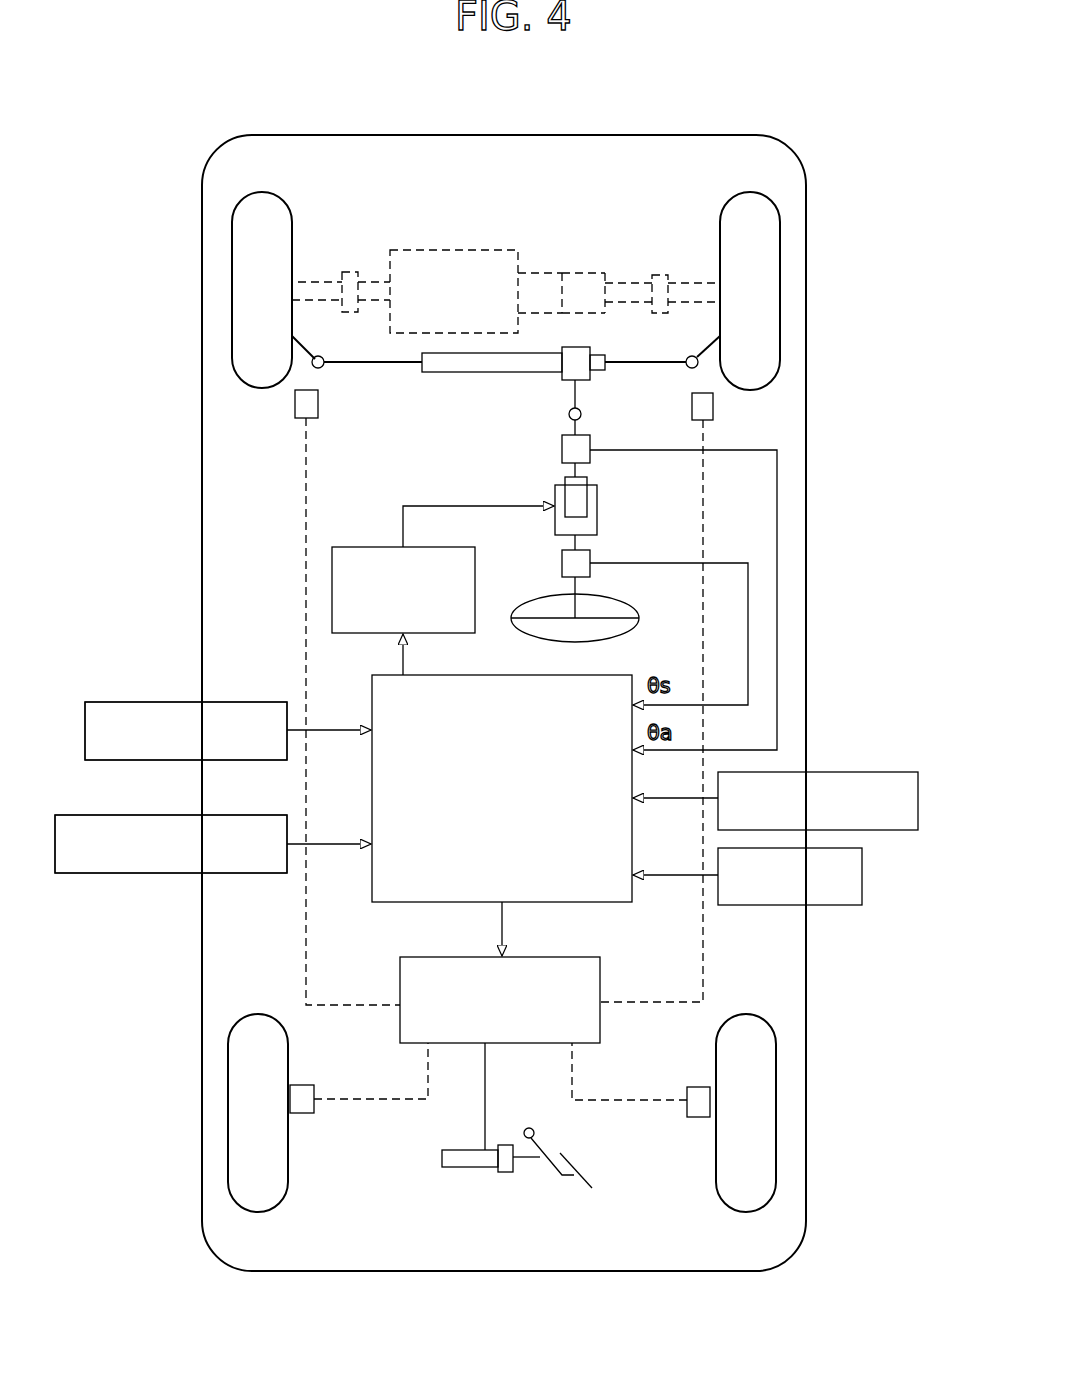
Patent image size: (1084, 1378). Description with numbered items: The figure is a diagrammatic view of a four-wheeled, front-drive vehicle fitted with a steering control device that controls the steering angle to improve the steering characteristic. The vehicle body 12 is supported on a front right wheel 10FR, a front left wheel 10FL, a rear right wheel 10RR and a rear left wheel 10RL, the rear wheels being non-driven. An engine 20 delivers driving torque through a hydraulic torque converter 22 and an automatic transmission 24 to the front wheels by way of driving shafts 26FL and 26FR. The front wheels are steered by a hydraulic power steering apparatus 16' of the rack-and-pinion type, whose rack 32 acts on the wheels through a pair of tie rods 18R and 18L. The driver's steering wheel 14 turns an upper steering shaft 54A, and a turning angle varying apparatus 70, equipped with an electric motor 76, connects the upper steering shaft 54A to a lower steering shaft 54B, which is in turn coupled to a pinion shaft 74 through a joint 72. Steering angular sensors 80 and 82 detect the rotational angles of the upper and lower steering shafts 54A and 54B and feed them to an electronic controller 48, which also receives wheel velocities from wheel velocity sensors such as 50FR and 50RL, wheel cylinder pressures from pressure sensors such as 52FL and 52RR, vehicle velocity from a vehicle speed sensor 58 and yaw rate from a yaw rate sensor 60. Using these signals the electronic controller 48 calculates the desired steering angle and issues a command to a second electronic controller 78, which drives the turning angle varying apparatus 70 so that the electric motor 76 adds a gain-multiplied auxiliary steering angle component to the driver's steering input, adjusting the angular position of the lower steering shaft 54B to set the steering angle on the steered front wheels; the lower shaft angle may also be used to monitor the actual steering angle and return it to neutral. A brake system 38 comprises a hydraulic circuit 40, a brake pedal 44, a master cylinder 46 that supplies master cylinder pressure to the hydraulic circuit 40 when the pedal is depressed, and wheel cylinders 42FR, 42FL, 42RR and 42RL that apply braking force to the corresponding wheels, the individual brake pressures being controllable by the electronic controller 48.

The front left wheel 10FL is at (232, 303).
The front right wheel 10FR is at (780, 305).
The rear left wheel 10RL is at (228, 1118).
The rear right wheel 10RR is at (776, 1125).
The vehicle body 12 is at (806, 565).
The steering wheel 14 is at (618, 604).
The hydraulic power steering apparatus 16' is at (513, 382).
The tie rod 18L is at (307, 347).
The tie rod 18R is at (705, 349).
The engine 20 is at (459, 248).
The hydraulic torque converter 22 is at (544, 273).
The automatic transmission 24 is at (587, 273).
The driving shaft 26FL is at (315, 282).
The driving shaft 26FR is at (686, 283).
The rack bar 32 is at (382, 365).
The brake system 38 is at (420, 1146).
The hydraulic circuit 40 is at (513, 1036).
The wheel cylinder 42FL is at (295, 400).
The wheel cylinder 42FR is at (692, 407).
The wheel cylinder 42RL is at (302, 1085).
The wheel cylinder 42RR is at (697, 1087).
The brake pedal 44 is at (582, 1180).
The master cylinder 46 is at (460, 1167).
The electronic controller 48 is at (515, 820).
The wheel velocity sensor 50FR is at (235, 702).
The wheel velocity sensor 50RL is at (186, 702).
The pressure sensor 52FL is at (235, 875).
The pressure sensor 52RR is at (171, 889).
The upper steering shaft 54A is at (578, 538).
The lower steering shaft 54B is at (578, 468).
The vehicle speed sensor 58 is at (876, 772).
The yaw rate sensor 60 is at (772, 908).
The turning angle varying apparatus 70 is at (545, 518).
The joint 72 is at (568, 414).
The pinion shaft 74 is at (580, 393).
The electric motor 76 is at (600, 500).
The electronic controller for steering 78 is at (416, 624).
The steering angular sensor 80 is at (562, 565).
The steering angular sensor 82 is at (562, 450).